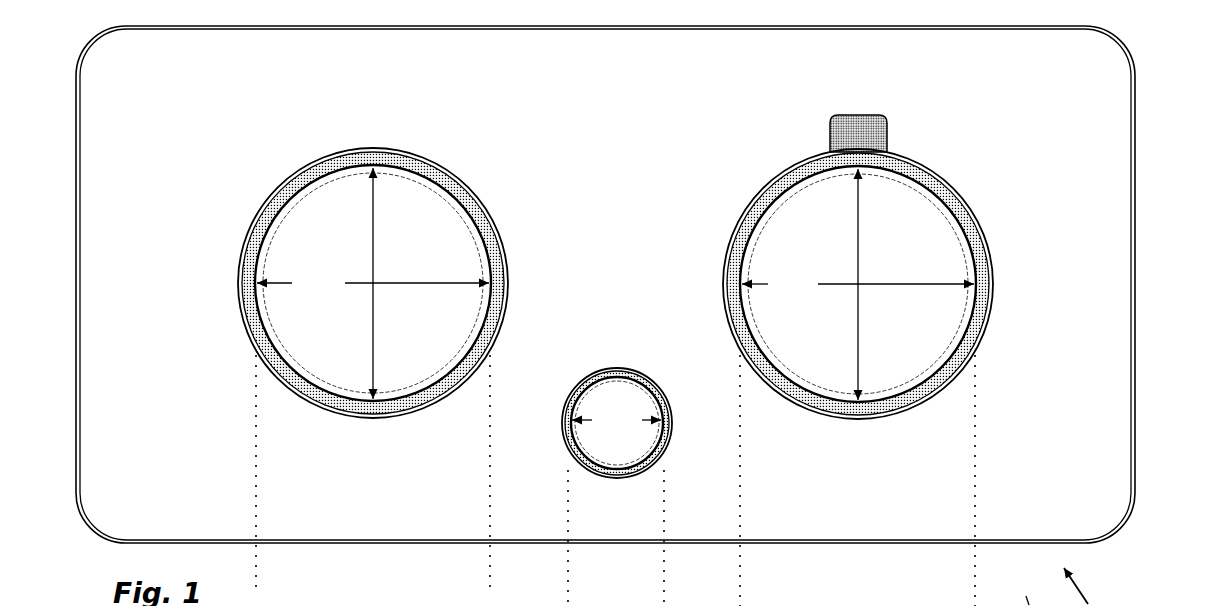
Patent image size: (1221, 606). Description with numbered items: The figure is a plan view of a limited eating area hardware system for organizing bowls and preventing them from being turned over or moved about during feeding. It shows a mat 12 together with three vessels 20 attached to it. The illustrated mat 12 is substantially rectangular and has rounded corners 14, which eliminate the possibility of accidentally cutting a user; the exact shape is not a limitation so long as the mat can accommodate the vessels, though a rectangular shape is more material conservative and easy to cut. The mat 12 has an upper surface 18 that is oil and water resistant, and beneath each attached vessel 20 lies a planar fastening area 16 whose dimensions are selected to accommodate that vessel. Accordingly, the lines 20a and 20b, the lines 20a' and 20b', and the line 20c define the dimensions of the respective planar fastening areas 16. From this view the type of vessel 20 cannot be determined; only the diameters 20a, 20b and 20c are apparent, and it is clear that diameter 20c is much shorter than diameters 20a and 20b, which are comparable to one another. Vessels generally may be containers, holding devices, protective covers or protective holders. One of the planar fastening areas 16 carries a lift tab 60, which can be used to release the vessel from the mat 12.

The mat 12 is at (571, 300).
The rounded corners 14 is at (1138, 60).
The planar fastening area 16 is at (615, 338).
The upper surface 18 is at (184, 509).
The vessel 20 is at (440, 334).
The diameter line of first vessel 20a is at (373, 283).
The second dimension line of first vessel 20a' is at (376, 283).
The diameter line of second vessel 20b is at (858, 284).
The second dimension line of second vessel 20b' is at (860, 284).
The diameter line of third vessel 20c is at (616, 419).
The lift tab 60 is at (858, 133).